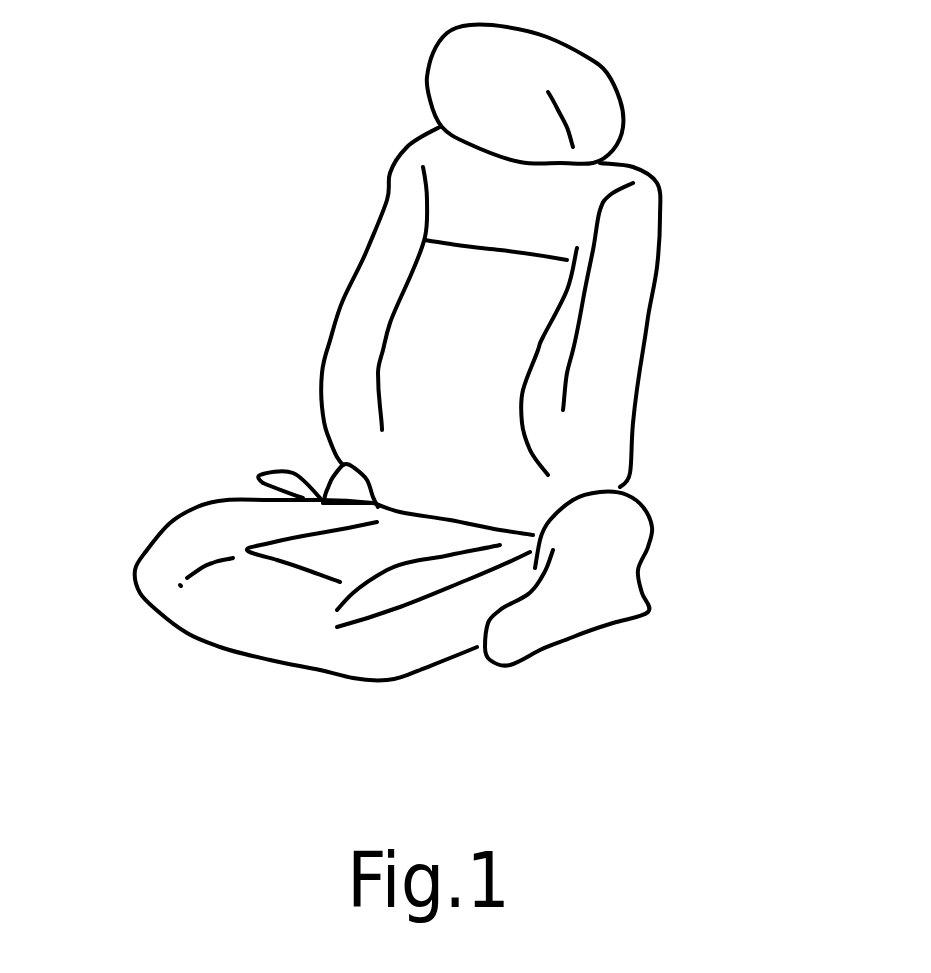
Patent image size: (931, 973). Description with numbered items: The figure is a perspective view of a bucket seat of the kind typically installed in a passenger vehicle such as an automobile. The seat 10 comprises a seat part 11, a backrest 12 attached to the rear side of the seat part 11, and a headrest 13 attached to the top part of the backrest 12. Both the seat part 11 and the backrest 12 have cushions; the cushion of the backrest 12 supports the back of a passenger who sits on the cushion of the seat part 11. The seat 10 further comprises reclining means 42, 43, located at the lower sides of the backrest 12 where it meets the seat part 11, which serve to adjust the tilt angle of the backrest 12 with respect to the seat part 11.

The seat 10 is at (152, 200).
The seat part 11 is at (203, 625).
The backrest 12 is at (648, 318).
The headrest 13 is at (600, 68).
The reclining means 42 is at (282, 432).
The reclining means 43 is at (680, 496).